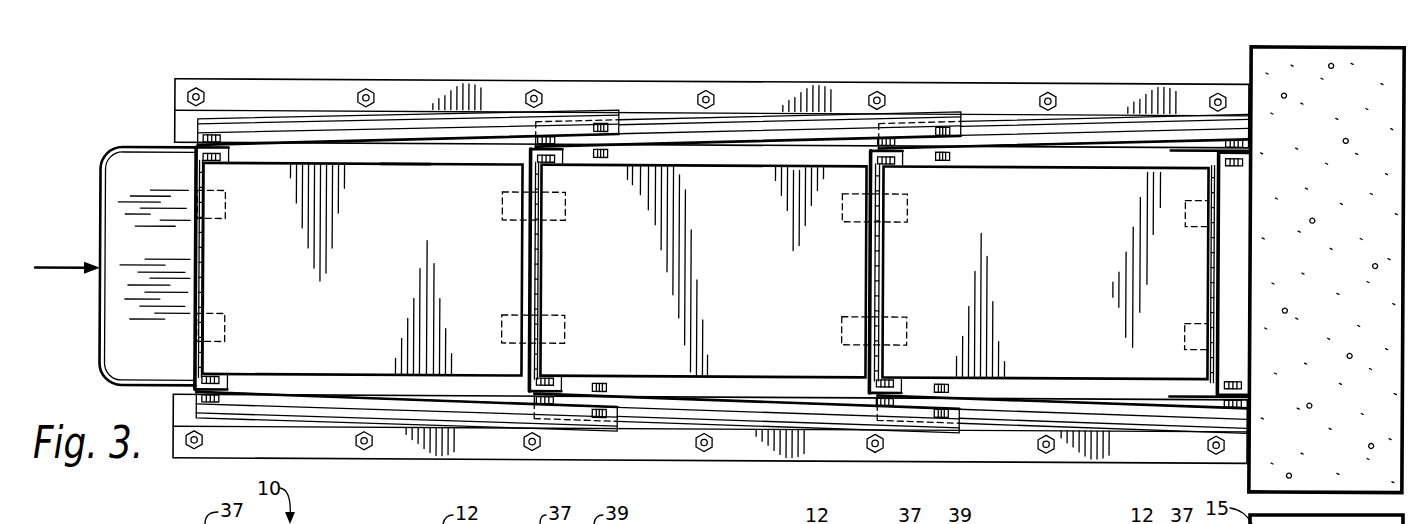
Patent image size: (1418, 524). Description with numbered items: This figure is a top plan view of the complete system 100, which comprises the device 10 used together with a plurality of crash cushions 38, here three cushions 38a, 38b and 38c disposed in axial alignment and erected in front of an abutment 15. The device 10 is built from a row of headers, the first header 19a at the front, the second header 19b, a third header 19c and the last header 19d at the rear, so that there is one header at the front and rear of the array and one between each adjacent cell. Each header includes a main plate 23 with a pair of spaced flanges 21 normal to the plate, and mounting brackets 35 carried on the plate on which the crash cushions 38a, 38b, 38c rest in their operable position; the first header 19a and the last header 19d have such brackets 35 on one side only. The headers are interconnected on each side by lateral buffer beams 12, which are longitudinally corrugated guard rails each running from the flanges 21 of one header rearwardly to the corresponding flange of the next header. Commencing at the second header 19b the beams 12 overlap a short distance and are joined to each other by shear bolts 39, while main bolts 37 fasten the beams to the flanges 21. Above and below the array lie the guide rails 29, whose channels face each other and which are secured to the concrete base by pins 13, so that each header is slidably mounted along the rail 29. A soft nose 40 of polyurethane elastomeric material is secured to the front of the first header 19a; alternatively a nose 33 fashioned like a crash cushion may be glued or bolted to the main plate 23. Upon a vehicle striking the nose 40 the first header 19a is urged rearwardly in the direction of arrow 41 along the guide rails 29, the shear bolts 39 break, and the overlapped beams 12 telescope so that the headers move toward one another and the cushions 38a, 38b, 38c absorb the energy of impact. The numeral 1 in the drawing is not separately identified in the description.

The storage system 1 is at (403, 428).
The device 10 is at (283, 108).
The lateral buffer beam 12 is at (648, 125).
The pin 13 is at (197, 91).
The abutment 15 is at (1255, 62).
The first header 19a is at (208, 278).
The second header 19b is at (550, 280).
The header 19c is at (892, 282).
The header 19d is at (1200, 283).
The flange 21 is at (222, 151).
The main plate 23 is at (193, 250).
The guide rail 29 is at (173, 92).
The nose 33 is at (122, 211).
The mounting bracket 35 is at (222, 215).
The main bolt 37 is at (200, 137).
The crash cushion 38 is at (404, 158).
The crash cushion 38a is at (378, 286).
The crash cushion 38b is at (741, 287).
The crash cushion 38c is at (1058, 289).
The shear bolt 39 is at (600, 122).
The soft nose 40 is at (105, 310).
The arrow 41 is at (48, 262).
The system 100 is at (803, 56).